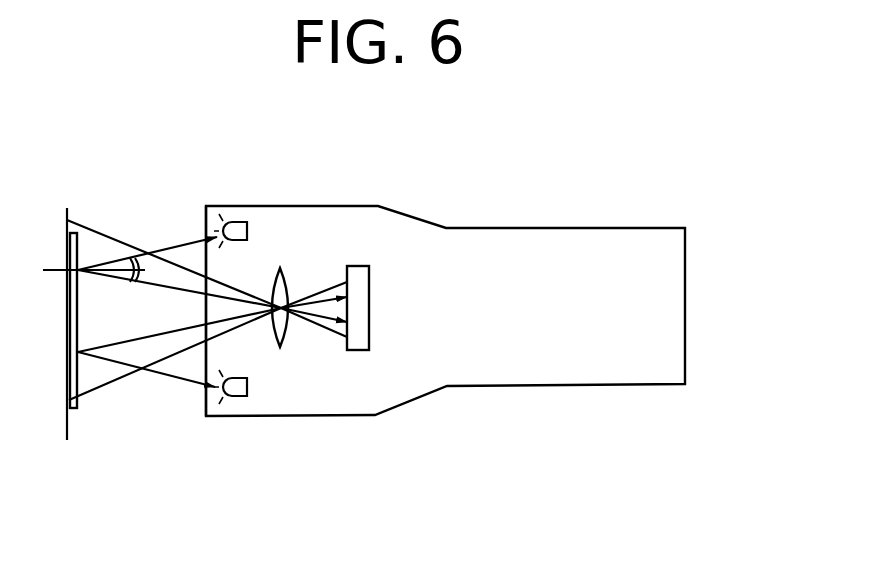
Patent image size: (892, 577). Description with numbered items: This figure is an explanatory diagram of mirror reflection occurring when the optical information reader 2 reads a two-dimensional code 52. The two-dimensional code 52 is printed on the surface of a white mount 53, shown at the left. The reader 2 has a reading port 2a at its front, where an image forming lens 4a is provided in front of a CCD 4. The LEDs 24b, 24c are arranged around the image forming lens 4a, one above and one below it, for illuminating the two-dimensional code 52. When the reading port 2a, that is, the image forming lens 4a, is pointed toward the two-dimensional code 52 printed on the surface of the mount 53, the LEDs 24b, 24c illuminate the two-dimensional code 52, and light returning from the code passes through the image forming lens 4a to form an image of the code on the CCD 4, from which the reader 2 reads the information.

The optical information reader 2 is at (688, 298).
The reading port 2a is at (205, 223).
The CCD 4 is at (359, 265).
The image forming lens 4a is at (292, 280).
The LED 24b is at (243, 222).
The LED 24c is at (234, 400).
The two-dimensional code 52 is at (72, 407).
The mount 53 is at (68, 435).